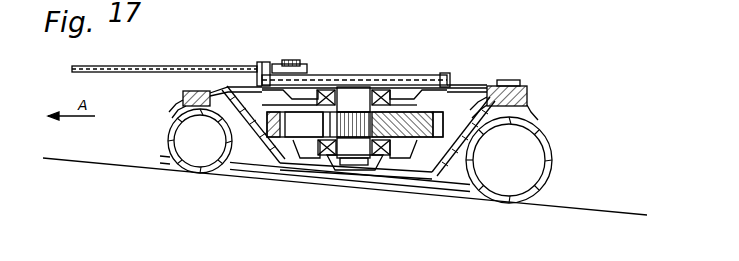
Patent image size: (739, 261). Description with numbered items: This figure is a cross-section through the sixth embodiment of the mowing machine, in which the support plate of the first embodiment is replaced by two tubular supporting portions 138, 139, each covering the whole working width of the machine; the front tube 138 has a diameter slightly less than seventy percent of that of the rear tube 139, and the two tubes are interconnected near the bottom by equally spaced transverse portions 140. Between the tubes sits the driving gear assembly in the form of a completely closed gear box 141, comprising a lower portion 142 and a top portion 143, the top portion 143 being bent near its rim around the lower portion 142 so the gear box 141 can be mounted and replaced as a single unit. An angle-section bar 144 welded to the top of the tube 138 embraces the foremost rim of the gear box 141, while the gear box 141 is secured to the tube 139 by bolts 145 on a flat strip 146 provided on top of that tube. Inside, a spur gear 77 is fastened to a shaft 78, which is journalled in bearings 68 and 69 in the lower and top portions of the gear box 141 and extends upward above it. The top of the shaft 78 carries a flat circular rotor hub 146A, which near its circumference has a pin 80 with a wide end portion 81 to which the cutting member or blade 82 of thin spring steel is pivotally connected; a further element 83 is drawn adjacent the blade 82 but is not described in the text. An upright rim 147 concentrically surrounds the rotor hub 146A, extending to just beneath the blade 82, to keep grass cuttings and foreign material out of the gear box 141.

The bearing 68 is at (320, 168).
The bearing 69 is at (386, 82).
The spur gear 77 is at (402, 152).
The shaft 78 is at (358, 78).
The pin 80 is at (283, 60).
The wide end portion 81 is at (290, 63).
The cutting member 82 is at (170, 66).
The bracket 83 is at (266, 62).
The tubular supporting portion 138 is at (168, 138).
The tubular supporting portion 139 is at (547, 158).
The transverse portion 140 is at (319, 192).
The gear box 141 is at (262, 148).
The lower portion 142 is at (287, 162).
The top portion 143 is at (480, 87).
The angle-section bar 144 is at (182, 98).
The bolts 145 is at (517, 88).
The flat strip 146 is at (527, 110).
The rotor hub 146A is at (345, 97).
The upright rim 147 is at (452, 76).